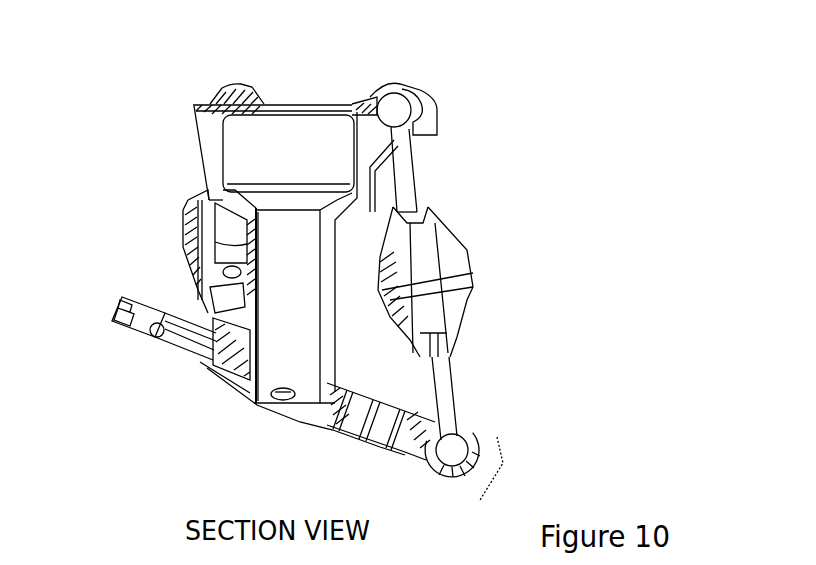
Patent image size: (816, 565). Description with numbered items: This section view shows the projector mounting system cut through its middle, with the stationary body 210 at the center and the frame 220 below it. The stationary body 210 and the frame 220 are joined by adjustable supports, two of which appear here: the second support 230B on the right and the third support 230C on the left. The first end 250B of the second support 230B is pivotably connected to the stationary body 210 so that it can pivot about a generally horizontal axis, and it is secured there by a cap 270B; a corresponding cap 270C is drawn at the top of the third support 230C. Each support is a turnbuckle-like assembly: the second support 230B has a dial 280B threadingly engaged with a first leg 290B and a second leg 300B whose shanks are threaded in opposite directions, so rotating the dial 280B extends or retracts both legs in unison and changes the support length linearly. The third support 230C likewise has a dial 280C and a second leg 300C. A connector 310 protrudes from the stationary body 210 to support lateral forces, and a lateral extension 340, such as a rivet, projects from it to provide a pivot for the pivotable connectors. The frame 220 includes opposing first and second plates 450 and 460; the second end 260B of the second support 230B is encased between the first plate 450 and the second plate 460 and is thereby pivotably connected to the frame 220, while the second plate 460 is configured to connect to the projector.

The stationary body 210 is at (307, 84).
The frame 220 is at (123, 356).
The second support 230B is at (466, 214).
The third support 230C is at (166, 174).
The first end of the second support 250B is at (393, 99).
The second end of the second support 260B is at (452, 444).
The cap 270B is at (427, 93).
The cap 270C is at (228, 78).
The dial 280B is at (473, 287).
The dial 280C is at (183, 220).
The first leg 290B is at (420, 167).
The second leg 300B is at (460, 404).
The second leg 300C is at (207, 312).
The connector 310 is at (340, 331).
The lateral extension 340 is at (272, 397).
The first plate 450 is at (200, 316).
The second plate 460 is at (163, 360).